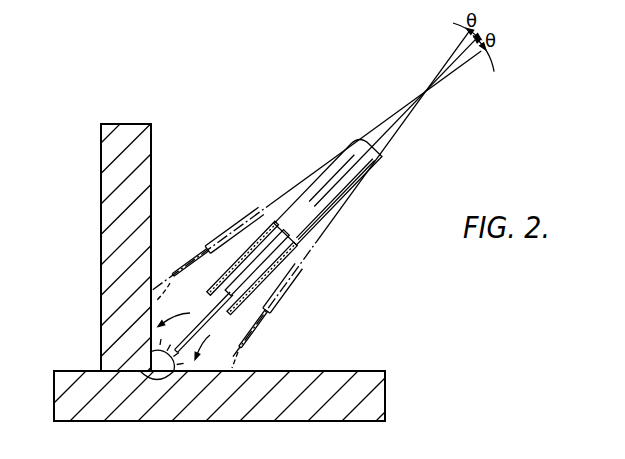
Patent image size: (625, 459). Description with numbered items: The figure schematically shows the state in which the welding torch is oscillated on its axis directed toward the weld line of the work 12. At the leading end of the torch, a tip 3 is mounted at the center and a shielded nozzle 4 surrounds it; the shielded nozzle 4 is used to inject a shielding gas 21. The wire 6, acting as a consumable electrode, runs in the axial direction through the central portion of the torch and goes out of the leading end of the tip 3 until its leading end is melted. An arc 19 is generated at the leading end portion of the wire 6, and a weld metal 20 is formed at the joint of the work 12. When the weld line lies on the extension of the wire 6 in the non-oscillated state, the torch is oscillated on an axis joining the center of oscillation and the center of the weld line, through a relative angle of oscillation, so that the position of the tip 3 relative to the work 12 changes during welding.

The tip 3 is at (258, 251).
The shielded nozzle 4 is at (327, 170).
The wire 6 is at (204, 316).
The work 12 is at (101, 208).
The arc 19 is at (157, 350).
The weld metal 20 is at (152, 375).
The shielding gas 21 is at (212, 334).